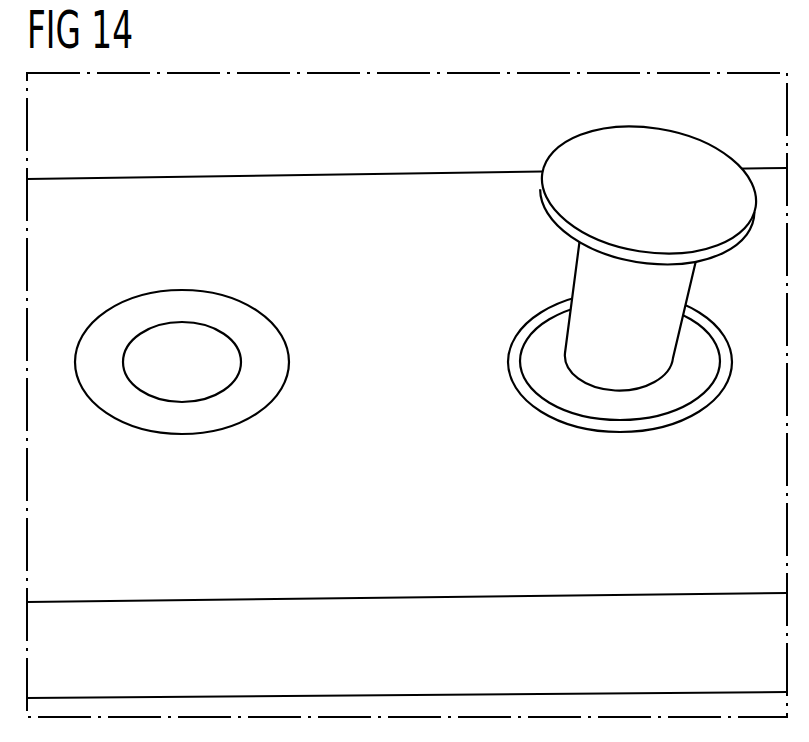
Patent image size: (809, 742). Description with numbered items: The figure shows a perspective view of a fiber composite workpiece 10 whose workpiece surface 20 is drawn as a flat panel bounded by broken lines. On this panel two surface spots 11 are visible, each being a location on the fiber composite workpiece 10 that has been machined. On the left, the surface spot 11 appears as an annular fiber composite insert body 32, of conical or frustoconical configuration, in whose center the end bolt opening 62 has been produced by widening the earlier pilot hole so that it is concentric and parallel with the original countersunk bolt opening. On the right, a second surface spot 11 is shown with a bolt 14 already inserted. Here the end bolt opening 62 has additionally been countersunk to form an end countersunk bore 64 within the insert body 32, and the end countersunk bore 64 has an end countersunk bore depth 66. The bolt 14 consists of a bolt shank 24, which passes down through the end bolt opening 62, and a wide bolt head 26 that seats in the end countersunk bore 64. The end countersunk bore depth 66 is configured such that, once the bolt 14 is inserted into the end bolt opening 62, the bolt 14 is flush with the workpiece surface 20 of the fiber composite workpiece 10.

The fiber composite workpiece 10 is at (156, 188).
The workpiece surface 20 is at (284, 193).
The surface spot 11 is at (403, 351).
The fiber composite insert body 32 is at (137, 308).
The end bolt opening 62 is at (182, 333).
The end countersunk bore depth 66 is at (518, 335).
The end countersunk bore 64 is at (558, 390).
The bolt 14 is at (619, 248).
The bolt shank 24 is at (574, 283).
The bolt head 26 is at (556, 163).